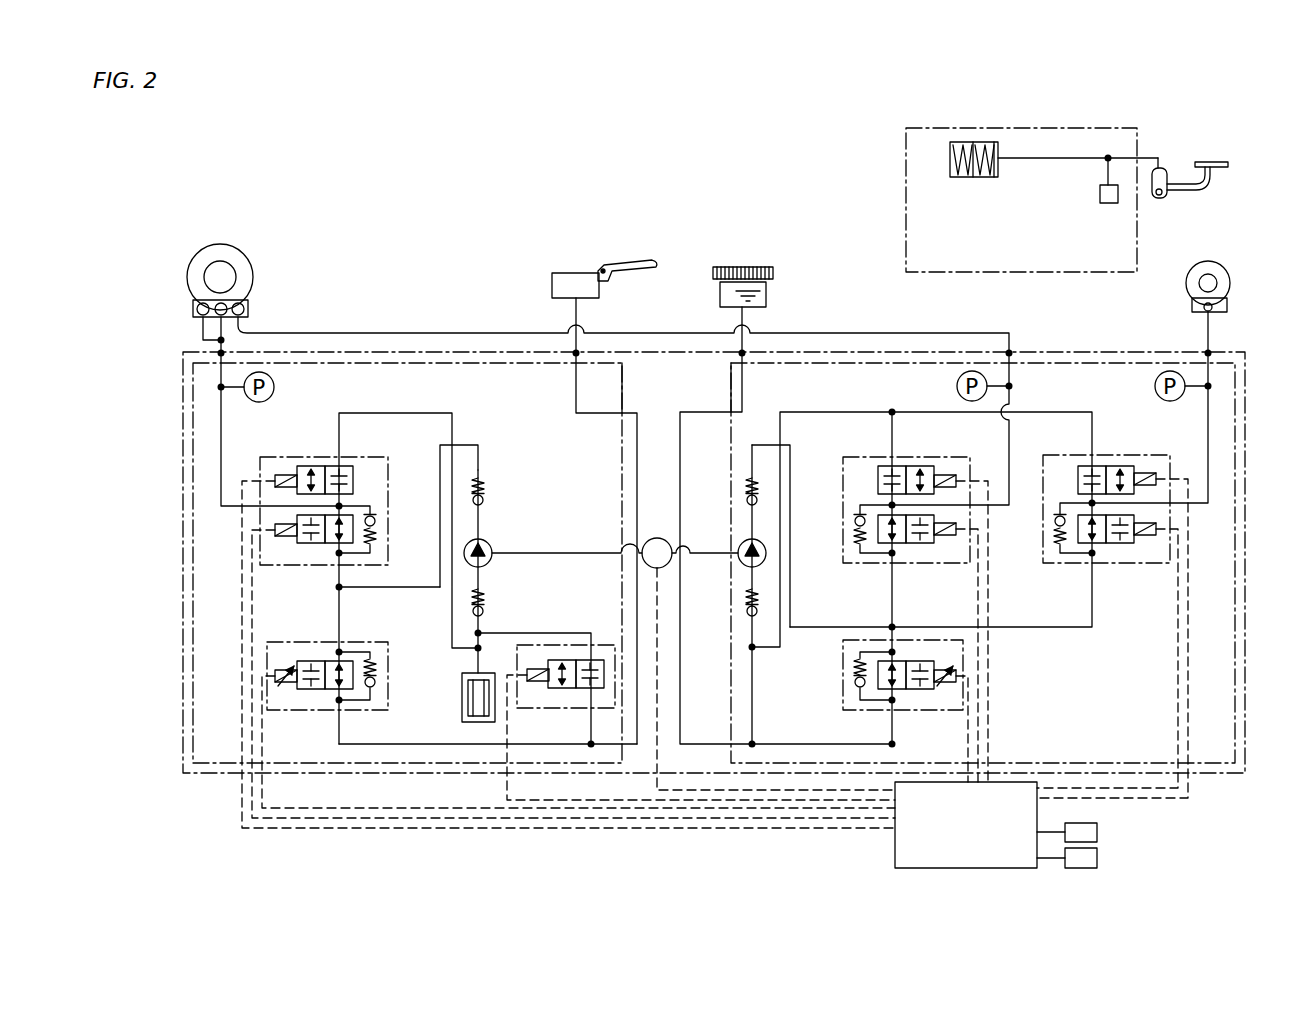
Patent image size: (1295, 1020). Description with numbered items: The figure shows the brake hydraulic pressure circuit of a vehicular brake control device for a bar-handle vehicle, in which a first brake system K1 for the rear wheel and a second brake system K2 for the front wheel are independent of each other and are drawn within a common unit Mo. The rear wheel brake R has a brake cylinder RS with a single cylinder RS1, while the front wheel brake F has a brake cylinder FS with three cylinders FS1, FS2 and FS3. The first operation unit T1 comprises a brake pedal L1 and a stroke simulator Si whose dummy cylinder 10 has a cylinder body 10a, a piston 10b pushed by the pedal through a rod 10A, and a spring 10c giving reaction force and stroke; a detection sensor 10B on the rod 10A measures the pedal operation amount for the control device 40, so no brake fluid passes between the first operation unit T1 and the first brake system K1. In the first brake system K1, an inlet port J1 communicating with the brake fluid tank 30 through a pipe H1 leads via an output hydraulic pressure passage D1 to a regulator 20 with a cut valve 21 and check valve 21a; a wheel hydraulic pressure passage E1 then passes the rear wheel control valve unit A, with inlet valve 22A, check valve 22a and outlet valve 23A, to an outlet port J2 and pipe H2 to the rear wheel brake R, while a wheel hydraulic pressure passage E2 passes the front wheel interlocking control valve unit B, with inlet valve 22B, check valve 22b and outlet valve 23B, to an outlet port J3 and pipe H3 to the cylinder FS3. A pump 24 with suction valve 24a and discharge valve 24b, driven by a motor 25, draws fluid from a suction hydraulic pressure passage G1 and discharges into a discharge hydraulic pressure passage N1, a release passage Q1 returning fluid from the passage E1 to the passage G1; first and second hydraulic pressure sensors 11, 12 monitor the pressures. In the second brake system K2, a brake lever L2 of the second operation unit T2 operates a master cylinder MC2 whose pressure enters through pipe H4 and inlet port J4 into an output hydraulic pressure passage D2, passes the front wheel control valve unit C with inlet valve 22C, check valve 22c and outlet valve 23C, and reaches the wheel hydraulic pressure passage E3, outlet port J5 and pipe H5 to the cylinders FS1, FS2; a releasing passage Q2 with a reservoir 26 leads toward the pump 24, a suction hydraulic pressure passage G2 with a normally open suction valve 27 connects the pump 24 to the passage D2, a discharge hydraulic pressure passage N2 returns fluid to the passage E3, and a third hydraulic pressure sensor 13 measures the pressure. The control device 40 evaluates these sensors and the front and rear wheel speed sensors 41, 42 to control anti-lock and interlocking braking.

The dummy cylinder 10 is at (1038, 230).
The cylinder body 10a is at (958, 178).
The piston 10b is at (985, 178).
The spring 10c is at (972, 178).
The rod 10A is at (1058, 160).
The detection sensor 10B is at (1108, 204).
The first hydraulic pressure sensor 11 is at (1155, 386).
The second hydraulic pressure sensor 12 is at (957, 386).
The third hydraulic pressure sensor 13 is at (275, 387).
The regulator 20 is at (843, 690).
The cut valve 21 is at (921, 690).
The check valve 21a is at (852, 670).
The inlet valve 22A is at (1122, 543).
The inlet valve 22B is at (920, 543).
The inlet valve 22C is at (316, 543).
The check valve 22a is at (1054, 540).
The check valve 22b is at (854, 540).
The check valve 22c is at (378, 540).
The outlet valve 23A is at (1108, 466).
The outlet valve 23B is at (906, 466).
The outlet valve 23C is at (316, 466).
The pump 24 is at (492, 545).
The suction valve 24a is at (486, 597).
The discharge valve 24b is at (486, 484).
The motor 25 is at (657, 538).
The reservoir 26 is at (462, 714).
The suction valve 27 is at (577, 689).
The brake fluid tank 30 is at (745, 267).
The control device 40 is at (966, 825).
The front wheel speed sensor 41 is at (1098, 832).
The rear wheel speed sensor 42 is at (1098, 858).
The rear wheel control valve unit A is at (1052, 456).
The front wheel interlocking control valve unit B is at (852, 458).
The front wheel control valve unit C is at (370, 458).
The output hydraulic pressure passage D1 is at (635, 590).
The output hydraulic pressure passage D2 is at (400, 744).
The wheel hydraulic pressure passage E1 is at (1208, 508).
The wheel hydraulic pressure passage E2 is at (1009, 495).
The wheel hydraulic pressure passage E3 is at (222, 432).
The wheel brake F is at (232, 240).
The brake cylinder FS is at (193, 305).
The cylinder FS1 is at (198, 315).
The cylinder FS2 is at (248, 313).
The cylinder FS3 is at (248, 303).
The suction hydraulic pressure passage G1 is at (681, 690).
The suction hydraulic pressure passage G2 is at (572, 645).
The hose H1 is at (744, 324).
The pipe H2 is at (1211, 340).
The pipe H3 is at (623, 325).
The pipe H4 is at (578, 318).
The pipe H5 is at (215, 346).
The inlet port J1 is at (739, 345).
The outlet port J2 is at (1206, 348).
The outlet port J3 is at (1011, 352).
The inlet port J4 is at (573, 345).
The outlet port J5 is at (218, 360).
The first brake system K1 is at (1235, 640).
The second brake system K2 is at (193, 648).
The brake pedal L1 is at (1214, 162).
The brake lever L2 is at (630, 261).
The master cylinder MC2 is at (575, 273).
The hydraulic modulator Mo is at (183, 492).
The discharge hydraulic pressure passage N1 is at (776, 442).
The discharge hydraulic pressure passage N2 is at (450, 442).
The release passage Q1 is at (1053, 412).
The releasing passage Q2 is at (396, 413).
The wheel brake R is at (1226, 252).
The brake cylinder RS is at (1229, 304).
The cylinder RS1 is at (1192, 306).
The stroke simulator Si is at (906, 198).
The first operation unit T1 is at (886, 134).
The second operation unit T2 is at (606, 220).